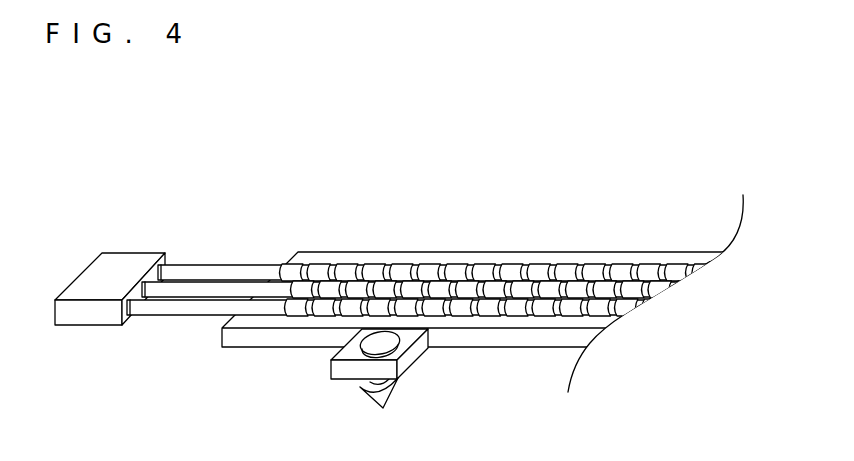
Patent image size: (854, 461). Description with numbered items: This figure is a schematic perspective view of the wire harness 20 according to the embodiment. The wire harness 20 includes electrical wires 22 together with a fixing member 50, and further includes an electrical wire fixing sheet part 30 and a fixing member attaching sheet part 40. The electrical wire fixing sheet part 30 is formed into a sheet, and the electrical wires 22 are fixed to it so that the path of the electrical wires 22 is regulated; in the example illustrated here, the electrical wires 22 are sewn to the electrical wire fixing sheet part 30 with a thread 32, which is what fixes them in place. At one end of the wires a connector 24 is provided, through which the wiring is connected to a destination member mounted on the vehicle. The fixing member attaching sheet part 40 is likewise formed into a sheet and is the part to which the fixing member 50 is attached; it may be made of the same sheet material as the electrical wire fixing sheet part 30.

The wire harness 20 is at (153, 138).
The electrical wires 22 is at (200, 274).
The connector 24 is at (122, 262).
The electrical wire fixing sheet part 30 is at (540, 255).
The thread 32 is at (417, 310).
The fixing member attaching sheet part 40 is at (342, 372).
The fixing member 50 is at (401, 397).